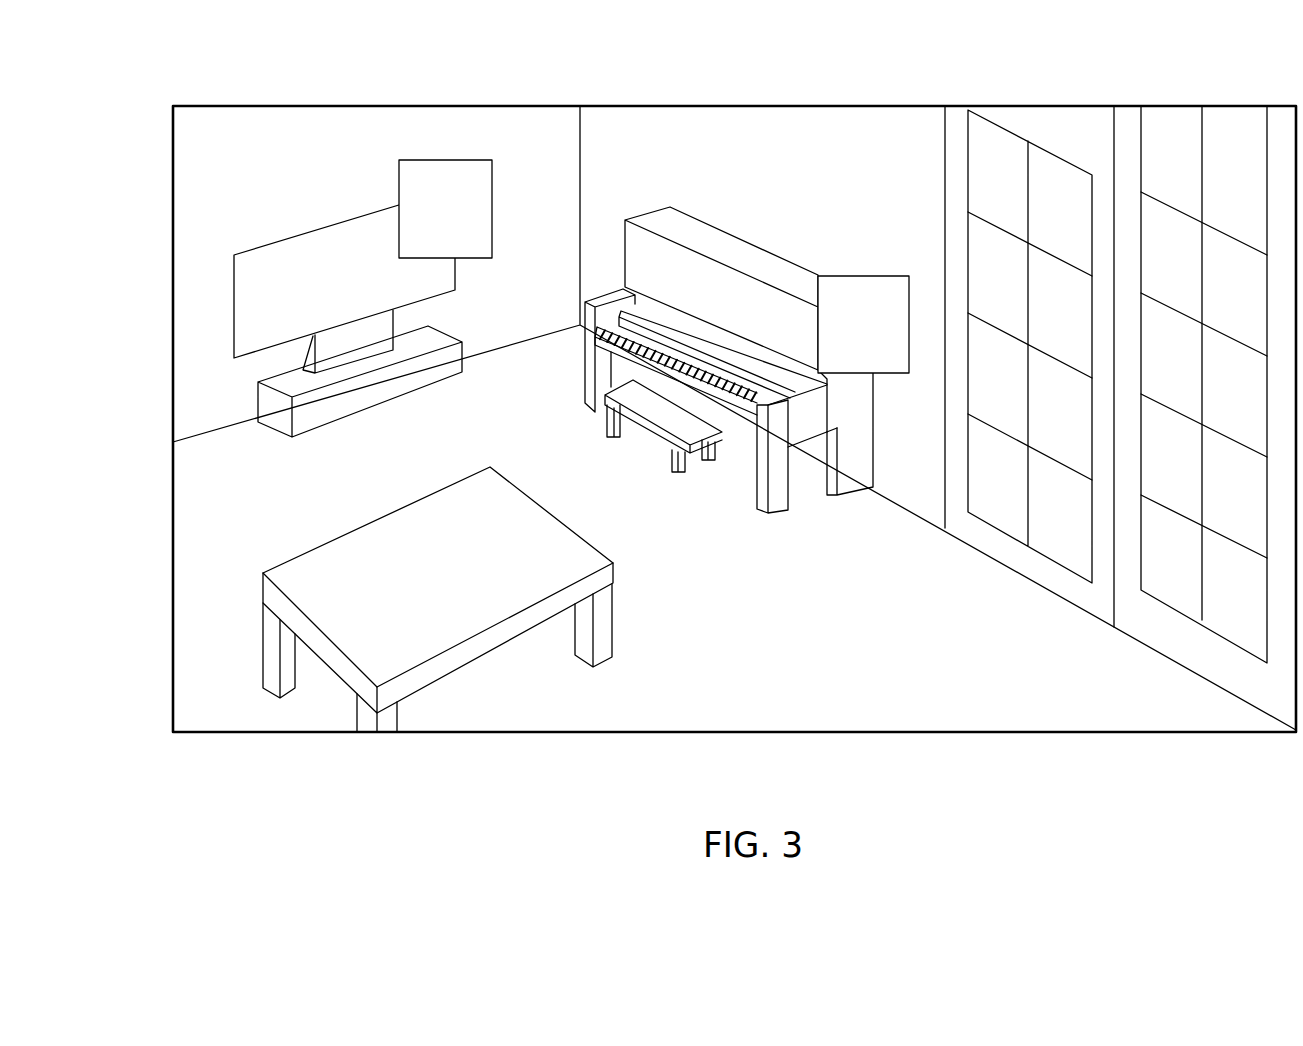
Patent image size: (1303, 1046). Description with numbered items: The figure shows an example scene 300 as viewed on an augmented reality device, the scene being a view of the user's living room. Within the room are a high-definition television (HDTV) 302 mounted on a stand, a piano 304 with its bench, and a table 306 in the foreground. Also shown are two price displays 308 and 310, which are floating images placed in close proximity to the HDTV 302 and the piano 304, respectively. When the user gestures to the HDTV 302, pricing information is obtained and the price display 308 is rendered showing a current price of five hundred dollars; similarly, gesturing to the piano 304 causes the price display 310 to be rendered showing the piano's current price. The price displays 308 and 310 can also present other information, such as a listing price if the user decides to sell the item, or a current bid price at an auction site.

The example scene 300 is at (124, 68).
The high-definition television (HDTV) 302 is at (253, 240).
The piano 304 is at (717, 222).
The table 306 is at (305, 533).
The price display 308 is at (505, 210).
The price display 310 is at (870, 270).